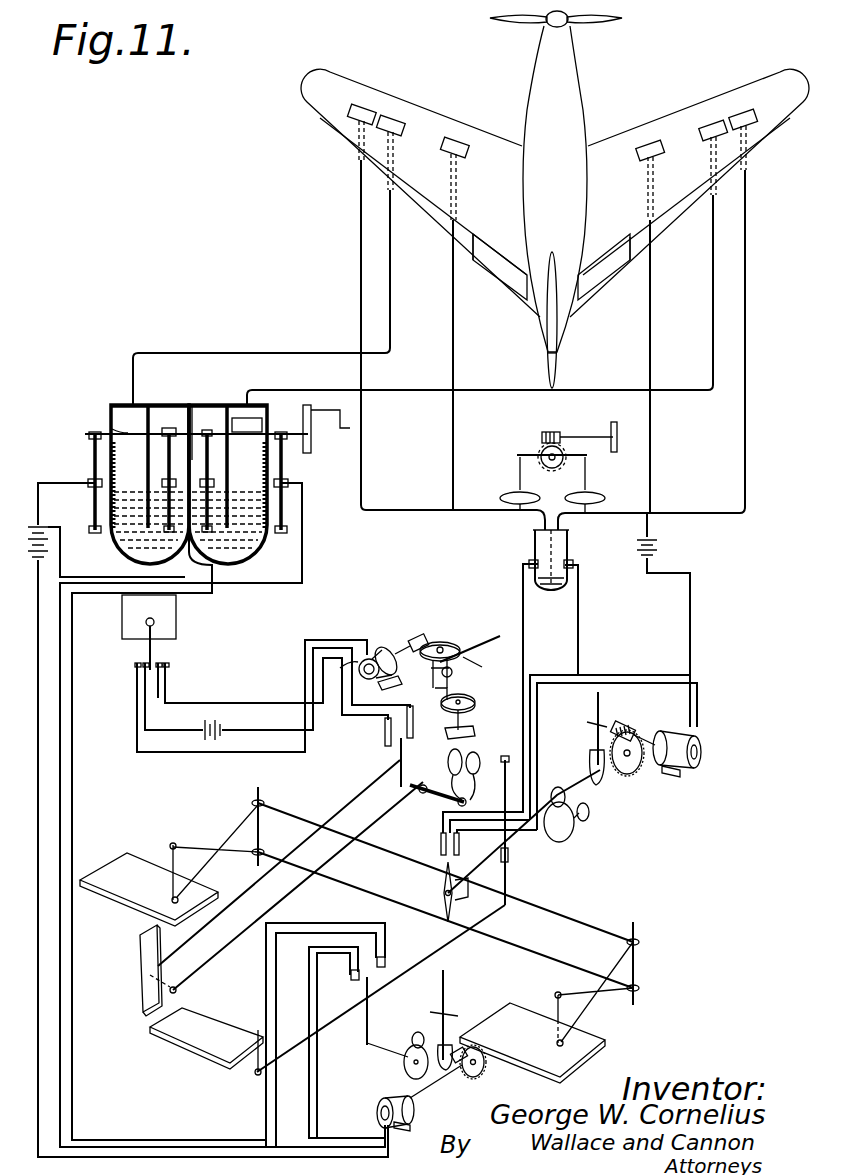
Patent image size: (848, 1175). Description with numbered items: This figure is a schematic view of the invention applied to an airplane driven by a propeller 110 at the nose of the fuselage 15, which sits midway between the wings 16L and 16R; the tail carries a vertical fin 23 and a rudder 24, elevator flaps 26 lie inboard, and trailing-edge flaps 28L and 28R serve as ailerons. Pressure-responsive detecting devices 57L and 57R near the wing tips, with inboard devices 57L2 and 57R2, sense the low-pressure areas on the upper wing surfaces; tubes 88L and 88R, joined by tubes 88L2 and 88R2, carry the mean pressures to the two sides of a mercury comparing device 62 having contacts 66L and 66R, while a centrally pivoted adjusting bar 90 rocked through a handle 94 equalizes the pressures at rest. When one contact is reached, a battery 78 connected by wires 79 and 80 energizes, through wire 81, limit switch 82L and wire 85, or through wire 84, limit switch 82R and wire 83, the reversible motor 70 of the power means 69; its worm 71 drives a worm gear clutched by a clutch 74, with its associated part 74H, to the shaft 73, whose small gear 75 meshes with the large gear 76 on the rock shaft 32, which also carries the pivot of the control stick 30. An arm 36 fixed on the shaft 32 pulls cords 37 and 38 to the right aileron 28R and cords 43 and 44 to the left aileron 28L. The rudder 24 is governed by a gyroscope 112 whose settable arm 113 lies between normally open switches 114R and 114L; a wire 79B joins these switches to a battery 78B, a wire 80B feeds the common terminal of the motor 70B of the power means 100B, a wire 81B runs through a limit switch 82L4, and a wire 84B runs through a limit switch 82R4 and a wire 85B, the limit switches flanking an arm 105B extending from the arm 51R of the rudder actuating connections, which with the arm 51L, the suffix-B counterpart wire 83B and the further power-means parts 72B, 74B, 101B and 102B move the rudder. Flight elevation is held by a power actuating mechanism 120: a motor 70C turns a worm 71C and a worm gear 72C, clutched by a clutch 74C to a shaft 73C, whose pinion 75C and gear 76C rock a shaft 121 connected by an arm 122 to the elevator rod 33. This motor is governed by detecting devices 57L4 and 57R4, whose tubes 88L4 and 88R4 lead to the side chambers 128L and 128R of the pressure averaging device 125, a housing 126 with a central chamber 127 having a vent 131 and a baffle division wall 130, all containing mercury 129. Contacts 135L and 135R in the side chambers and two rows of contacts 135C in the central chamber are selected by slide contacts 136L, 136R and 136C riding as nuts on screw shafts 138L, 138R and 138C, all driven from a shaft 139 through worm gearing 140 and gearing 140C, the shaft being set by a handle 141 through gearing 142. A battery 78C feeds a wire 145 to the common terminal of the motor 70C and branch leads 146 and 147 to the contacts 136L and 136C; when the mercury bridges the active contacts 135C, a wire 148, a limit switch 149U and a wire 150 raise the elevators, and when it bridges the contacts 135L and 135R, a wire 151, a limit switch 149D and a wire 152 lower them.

The propeller 110 is at (600, 26).
The fuselage 15 is at (584, 112).
The left wing 16L is at (435, 118).
The right wing 16R is at (676, 118).
The left outer pressure pickup 57L is at (361, 108).
The left pressure pickup 57L4 is at (392, 119).
The left inner pressure pickup 57L2 is at (465, 156).
The right outer pressure pickup 57R is at (745, 113).
The right pressure pickup 57R4 is at (713, 124).
The right inner pressure pickup 57R2 is at (640, 157).
The left aileron 28L is at (418, 212).
The right aileron 28R is at (690, 210).
The elevator / flap 26 is at (503, 277).
The vertical fin 23 is at (548, 318).
The rudder 24 is at (548, 366).
The left pressure tube 88L is at (358, 283).
The left inner pressure tube 88L2 is at (451, 373).
The left pressure tube to tank 88L4 is at (296, 351).
The right pressure tube 88R is at (748, 320).
The right inner pressure tube 88R2 is at (648, 370).
The right pressure tube to tank 88R4 is at (711, 330).
The liquid level device 125 is at (181, 388).
The left tank 128L is at (118, 405).
The right tank 128R is at (258, 405).
The partition plate 127 is at (212, 415).
The partition 131 is at (193, 420).
The connector 139 is at (128, 431).
The cross bar 140 is at (92, 434).
The center cap 140C is at (169, 428).
The center contact block 138C is at (247, 425).
The connecting wire 141 is at (343, 412).
The contact plate 142 is at (311, 434).
The left contact rod 138L is at (92, 456).
The right contact rod 138R is at (286, 498).
The left collar 136L is at (92, 483).
The right collar 136R is at (286, 480).
The center collar 136C is at (162, 483).
The left resistance coil 135L is at (112, 502).
The right resistance coil 135R is at (272, 508).
The center electrode 135C is at (147, 466).
The conductor 146 is at (40, 515).
The battery 78C is at (48, 543).
The conductor 147 is at (60, 577).
The center electrode 130 is at (190, 548).
The liquid 129 is at (240, 548).
The conductor 148 is at (213, 592).
The liquid 126 is at (262, 550).
The conductor 151 is at (302, 577).
The conductor 152 is at (266, 1112).
The conductor 145 is at (40, 740).
The adjusting worm 94 is at (612, 422).
The balance gear 90 is at (528, 452).
The mercury cup 62 is at (522, 552).
The left contact 66L is at (530, 565).
The right contact 66R is at (573, 565).
The conductor 79 is at (612, 515).
The battery 78 is at (658, 547).
The conductor 81 is at (522, 607).
The conductor 84 is at (590, 614).
The conductor 80 is at (692, 605).
The conductor 83 is at (603, 674).
The conductor 85 is at (648, 682).
The gyroscope 112 is at (176, 618).
The pendulum arm 113 is at (150, 651).
The left contact 114L is at (167, 679).
The right contact 114R is at (137, 682).
The conductor 81B is at (255, 697).
The conductor 79B is at (178, 726).
The battery 78B is at (222, 729).
The conductor 80B is at (316, 689).
The conductor 84B is at (230, 752).
The conductor 83B is at (337, 670).
The servo unit 100B is at (409, 630).
The motor 70B is at (371, 655).
The gear 72B is at (445, 645).
The motor base 85B is at (392, 684).
The shaft 74B is at (452, 676).
The contact 82R4 is at (413, 723).
The gear 101B is at (474, 702).
The crank plate 102B is at (472, 731).
The contact 82L4 is at (385, 739).
The pivot pin 105B is at (400, 750).
The left rudder link 51L is at (464, 752).
The right rudder link 51R is at (481, 760).
The control rod 30 is at (504, 780).
The hand lever 74H is at (596, 703).
The worm 71 is at (628, 728).
The motor 70 is at (677, 735).
The yoke 73 is at (590, 766).
The pinion 75 is at (554, 790).
The gear 74 is at (618, 770).
The servo unit 69 is at (646, 779).
The contact 82R is at (441, 841).
The contact 82L is at (466, 844).
The disc 76 is at (576, 828).
The shaft 32 is at (555, 840).
The link rod 44 is at (378, 882).
The link rod 43 is at (418, 858).
The bell crank 36 is at (443, 886).
The link rod 37 is at (566, 908).
The link rod 38 is at (540, 956).
The link rod 33 is at (452, 940).
The contact 149D is at (386, 958).
The contact 149U is at (352, 975).
The lever 122 is at (367, 1005).
The yoke 73C is at (445, 1045).
The lever 74C is at (448, 1020).
The pinion 75C is at (412, 1036).
The worm 71C is at (465, 1047).
The disc 76C is at (404, 1063).
The gear 72C is at (476, 1072).
The link 121 is at (380, 1048).
The conductor 150 is at (310, 1086).
The motor 70C is at (380, 1107).
The servo unit 120 is at (446, 1093).